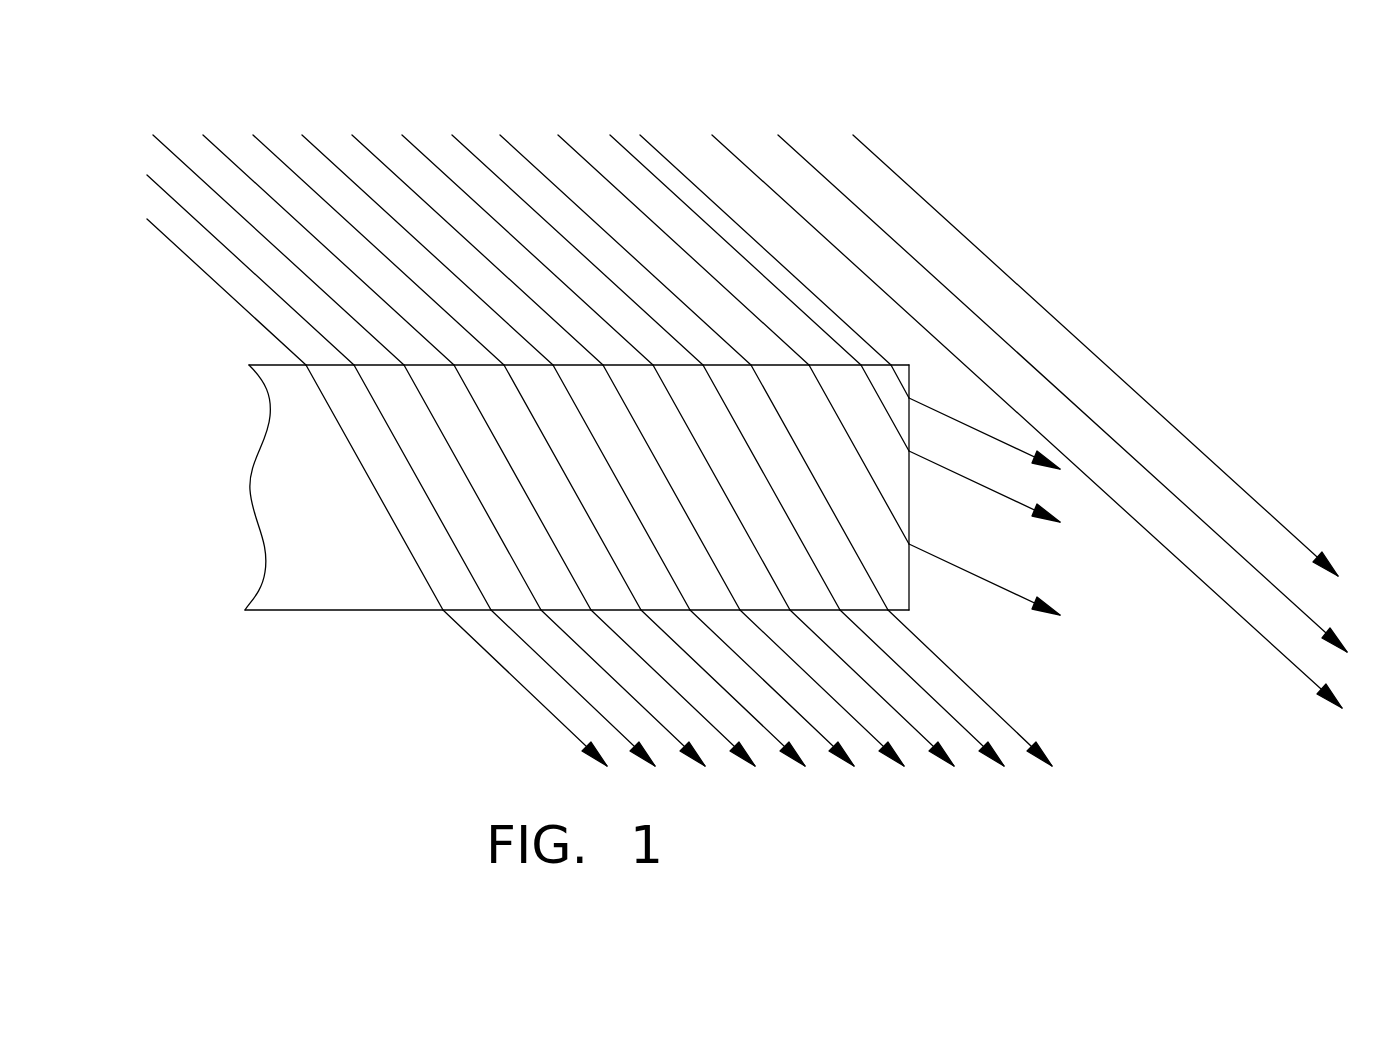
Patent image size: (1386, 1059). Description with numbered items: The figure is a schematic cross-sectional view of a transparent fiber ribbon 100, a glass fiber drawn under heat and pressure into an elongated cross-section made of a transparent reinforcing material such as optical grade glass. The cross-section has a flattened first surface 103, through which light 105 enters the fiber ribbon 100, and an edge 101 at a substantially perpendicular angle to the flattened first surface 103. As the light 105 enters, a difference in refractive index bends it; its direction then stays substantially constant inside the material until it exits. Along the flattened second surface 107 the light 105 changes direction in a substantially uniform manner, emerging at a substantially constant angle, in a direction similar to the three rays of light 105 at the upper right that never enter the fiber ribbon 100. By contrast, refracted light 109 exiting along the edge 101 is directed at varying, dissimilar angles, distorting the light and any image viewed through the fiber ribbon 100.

The transparent fiber ribbon 100 is at (298, 580).
The edge 101 is at (910, 413).
The flattened first surface 103 is at (322, 365).
The light 105 is at (465, 143).
The flattened second surface 107 is at (410, 612).
The refracted light 109 is at (990, 430).